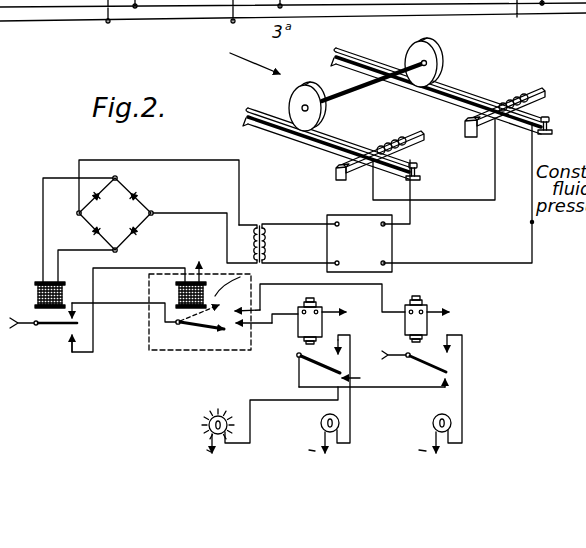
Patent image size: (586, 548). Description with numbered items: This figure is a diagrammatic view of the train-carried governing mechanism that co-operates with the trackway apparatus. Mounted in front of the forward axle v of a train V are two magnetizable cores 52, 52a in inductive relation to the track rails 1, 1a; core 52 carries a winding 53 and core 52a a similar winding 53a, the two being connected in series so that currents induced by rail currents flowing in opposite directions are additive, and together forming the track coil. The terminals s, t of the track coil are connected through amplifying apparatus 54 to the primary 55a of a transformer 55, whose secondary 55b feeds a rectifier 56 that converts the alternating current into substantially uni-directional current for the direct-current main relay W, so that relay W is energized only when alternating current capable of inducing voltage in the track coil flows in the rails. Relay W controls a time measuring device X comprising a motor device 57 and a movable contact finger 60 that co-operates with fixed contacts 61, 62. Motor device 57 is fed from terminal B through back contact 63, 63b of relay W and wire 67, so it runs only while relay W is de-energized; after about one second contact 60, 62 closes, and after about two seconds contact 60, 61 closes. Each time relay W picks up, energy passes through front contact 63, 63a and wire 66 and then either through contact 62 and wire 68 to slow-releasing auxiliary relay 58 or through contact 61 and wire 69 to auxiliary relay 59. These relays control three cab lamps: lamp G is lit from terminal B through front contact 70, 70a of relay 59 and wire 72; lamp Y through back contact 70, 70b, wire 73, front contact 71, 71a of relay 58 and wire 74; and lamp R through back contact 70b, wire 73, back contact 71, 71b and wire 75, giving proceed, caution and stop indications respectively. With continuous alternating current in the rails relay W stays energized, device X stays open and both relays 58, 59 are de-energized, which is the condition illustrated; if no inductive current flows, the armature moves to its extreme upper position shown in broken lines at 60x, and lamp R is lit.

The track rail 1 is at (343, 50).
The track rail 1a is at (250, 108).
The train V is at (436, 62).
The forward axle v is at (376, 80).
The magnetizable core 52 is at (546, 93).
The magnetizable core 52a is at (425, 142).
The winding 53 is at (517, 96).
The winding 53a is at (392, 147).
The amplifying apparatus 54 is at (414, 243).
The transformer 55 is at (260, 226).
The transformer primary 55a is at (271, 240).
The transformer secondary 55b is at (247, 243).
The rectifier 56 is at (89, 225).
The motor device 57 is at (186, 280).
The auxiliary relay 58 is at (320, 320).
The auxiliary relay 59 is at (426, 320).
The movable contact finger 60 is at (200, 328).
The extreme upper position of armature 60 60x is at (240, 277).
The fixed contact member 61 is at (240, 299).
The fixed contact member 62 is at (242, 326).
The contact of relay W 63 is at (52, 326).
The front contact of relay W 63a is at (79, 321).
The back contact of relay W 63b is at (70, 348).
The wire 66 is at (138, 302).
The wire 67 is at (93, 268).
The wire 68 is at (278, 314).
The wire 69 is at (382, 298).
The contact of relay 59 70 is at (441, 367).
The front contact of relay 59 70a is at (450, 351).
The back contact of relay 59 70b is at (449, 379).
The contact of relay 58 71 is at (320, 364).
The front contact of relay 58 71a is at (348, 343).
The back contact of relay 58 71b is at (367, 378).
The wire 72 is at (462, 432).
The wire 73 is at (414, 388).
The wire 74 is at (351, 415).
The wire 75 is at (250, 436).
The main relay W is at (35, 293).
The time measuring device X is at (148, 342).
The terminal of energy source B is at (24, 334).
The signal lamp R is at (208, 428).
The signal lamp Y is at (322, 420).
The signal lamp G is at (434, 420).
The track coil terminal s is at (410, 208).
The track coil terminal t is at (532, 222).